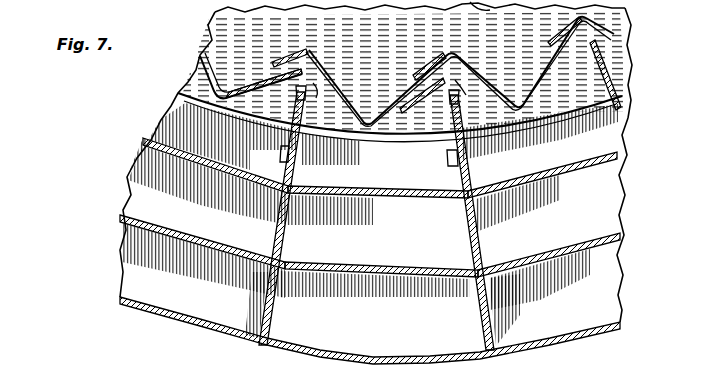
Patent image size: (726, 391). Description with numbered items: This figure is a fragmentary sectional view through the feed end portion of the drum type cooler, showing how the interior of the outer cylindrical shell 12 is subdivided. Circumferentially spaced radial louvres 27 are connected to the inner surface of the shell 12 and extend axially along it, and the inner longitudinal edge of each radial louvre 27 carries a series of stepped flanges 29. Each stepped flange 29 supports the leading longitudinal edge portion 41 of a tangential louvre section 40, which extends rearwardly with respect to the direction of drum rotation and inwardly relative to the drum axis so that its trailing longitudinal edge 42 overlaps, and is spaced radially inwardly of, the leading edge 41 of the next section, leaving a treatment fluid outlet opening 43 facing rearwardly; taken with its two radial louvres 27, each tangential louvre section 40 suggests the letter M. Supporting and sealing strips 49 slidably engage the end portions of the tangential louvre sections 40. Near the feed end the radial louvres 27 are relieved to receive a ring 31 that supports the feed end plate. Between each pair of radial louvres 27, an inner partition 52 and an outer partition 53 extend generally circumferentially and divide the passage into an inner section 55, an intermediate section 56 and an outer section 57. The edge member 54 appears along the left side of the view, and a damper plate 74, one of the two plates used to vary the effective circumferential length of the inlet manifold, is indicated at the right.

The outer cylindrical shell 12 is at (432, 356).
The radial louvre 27 is at (285, 211).
The stepped flange 29 is at (296, 86).
The ring 31 is at (498, 138).
The tangential louvre section 40 is at (337, 87).
The leading longitudinal edge portion 41 is at (316, 98).
The trailing longitudinal edge 42 is at (278, 58).
The treatment fluid outlet opening 43 is at (308, 48).
The supporting and sealing strip 49 is at (208, 50).
The inner partition 52 is at (553, 176).
The outer partition 53 is at (162, 143).
The horizontal rail 54 is at (122, 216).
The inner section 55 is at (375, 171).
The intermediate section 56 is at (368, 246).
The outer section 57 is at (358, 326).
The damper plate 74 is at (606, 298).